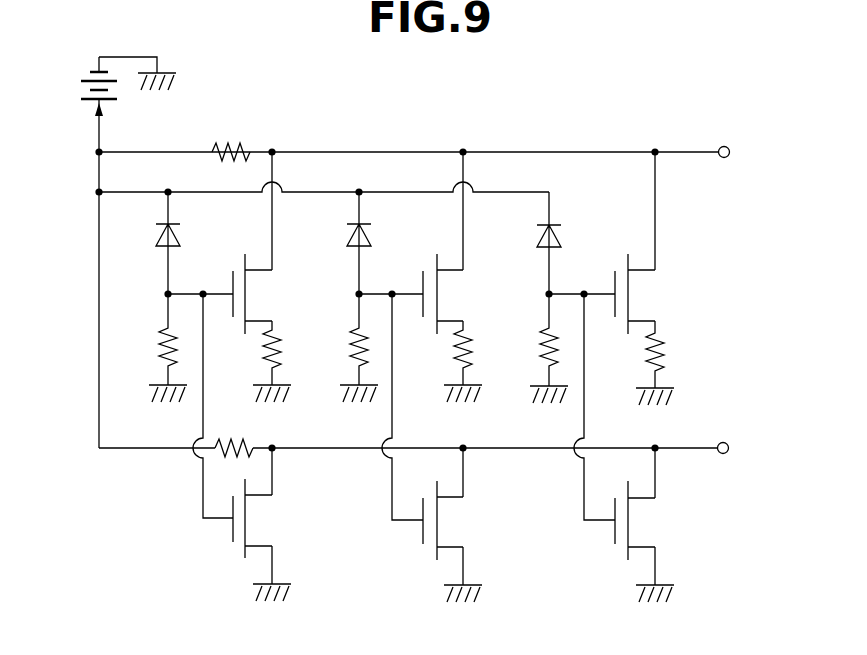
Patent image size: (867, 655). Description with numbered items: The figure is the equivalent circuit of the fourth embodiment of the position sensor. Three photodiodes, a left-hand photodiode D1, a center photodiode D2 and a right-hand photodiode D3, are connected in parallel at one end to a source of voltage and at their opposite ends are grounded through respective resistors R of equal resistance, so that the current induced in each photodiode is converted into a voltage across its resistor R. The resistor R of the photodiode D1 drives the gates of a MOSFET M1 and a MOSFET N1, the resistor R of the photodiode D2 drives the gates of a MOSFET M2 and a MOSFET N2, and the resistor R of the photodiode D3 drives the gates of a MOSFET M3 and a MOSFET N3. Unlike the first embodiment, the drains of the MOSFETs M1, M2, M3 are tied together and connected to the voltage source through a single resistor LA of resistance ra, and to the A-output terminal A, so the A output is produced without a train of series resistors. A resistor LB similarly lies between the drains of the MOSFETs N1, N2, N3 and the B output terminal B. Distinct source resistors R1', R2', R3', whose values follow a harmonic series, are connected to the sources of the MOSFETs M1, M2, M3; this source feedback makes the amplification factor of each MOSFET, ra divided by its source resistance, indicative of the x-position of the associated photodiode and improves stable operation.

The resistor LA is at (238, 143).
The resistor LB is at (253, 442).
The left-hand photodiode D1 is at (188, 231).
The center photodiode D2 is at (379, 231).
The right-hand photodiode D3 is at (570, 234).
The MOSFET M1 is at (276, 297).
The MOSFET M2 is at (468, 297).
The MOSFET M3 is at (659, 297).
The MOSFET N1 is at (277, 522).
The MOSFET N2 is at (469, 524).
The MOSFET N3 is at (660, 526).
The resistor R is at (151, 344).
The source resistor R1' is at (251, 361).
The source resistor R2' is at (442, 361).
The source resistor R3' is at (633, 363).
The A-output terminal A is at (734, 153).
The B output terminal B is at (733, 449).